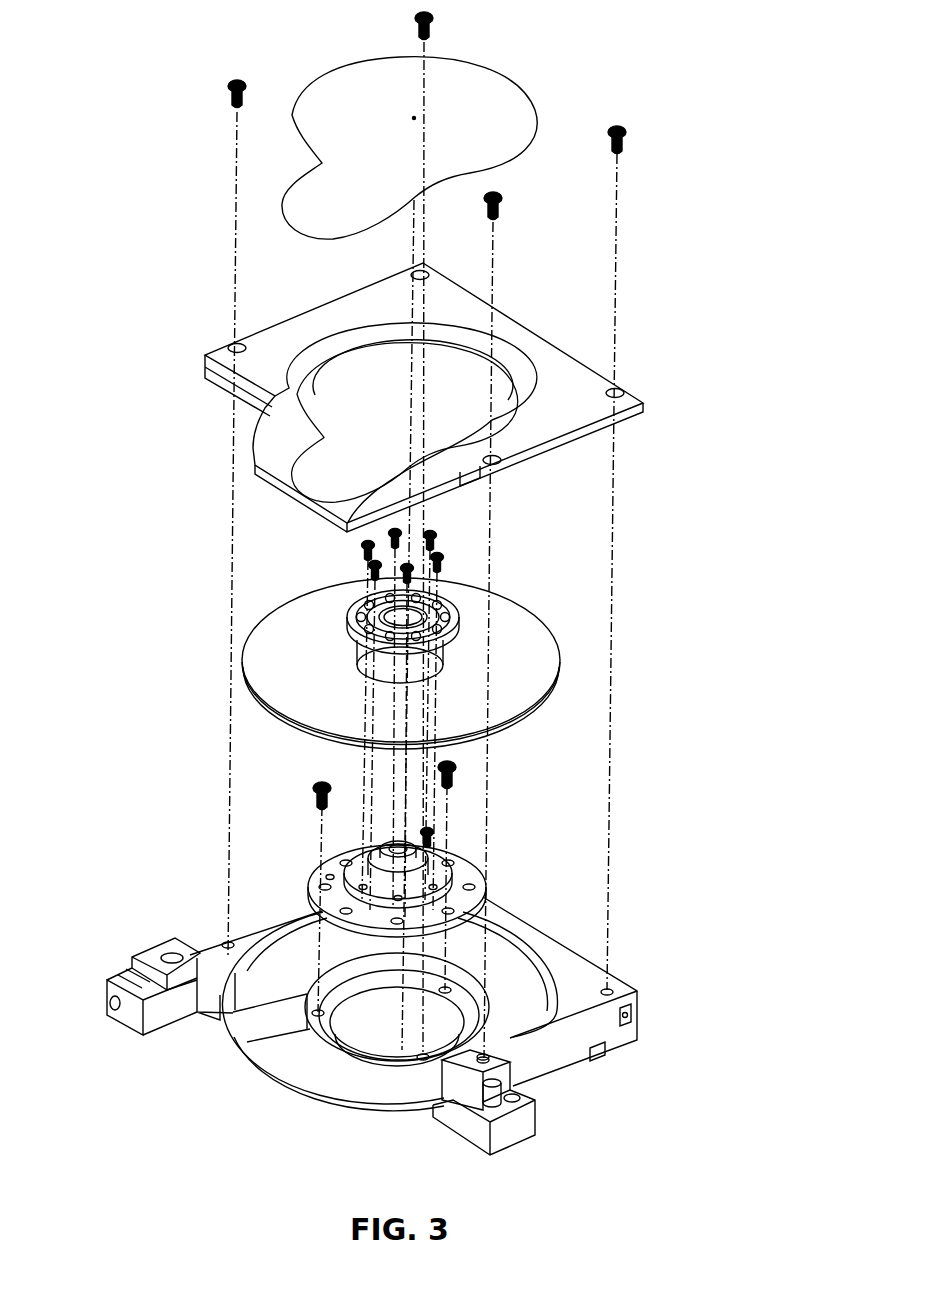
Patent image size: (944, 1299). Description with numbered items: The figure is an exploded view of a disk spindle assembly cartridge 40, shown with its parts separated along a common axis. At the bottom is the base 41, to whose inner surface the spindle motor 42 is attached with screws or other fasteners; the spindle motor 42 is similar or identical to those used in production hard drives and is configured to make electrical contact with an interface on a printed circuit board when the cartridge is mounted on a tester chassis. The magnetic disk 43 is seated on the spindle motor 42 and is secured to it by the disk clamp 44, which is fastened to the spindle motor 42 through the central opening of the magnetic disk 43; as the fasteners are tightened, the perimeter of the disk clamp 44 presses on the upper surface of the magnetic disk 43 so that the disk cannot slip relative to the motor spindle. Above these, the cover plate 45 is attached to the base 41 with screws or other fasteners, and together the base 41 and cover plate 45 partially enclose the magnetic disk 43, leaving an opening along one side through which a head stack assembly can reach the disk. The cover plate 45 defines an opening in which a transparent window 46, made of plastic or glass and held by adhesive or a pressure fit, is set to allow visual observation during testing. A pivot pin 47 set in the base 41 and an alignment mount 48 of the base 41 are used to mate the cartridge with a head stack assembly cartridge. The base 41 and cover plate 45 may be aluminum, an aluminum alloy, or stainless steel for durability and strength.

The disk spindle assembly cartridge 40 is at (173, 69).
The base 41 is at (330, 1072).
The spindle motor 42 is at (334, 889).
The magnetic disk 43 is at (296, 697).
The disk clamp 44 is at (358, 608).
The cover plate 45 is at (342, 317).
The transparent window 46 is at (330, 200).
The pivot pin 47 is at (492, 1092).
The alignment mount 48 is at (138, 985).